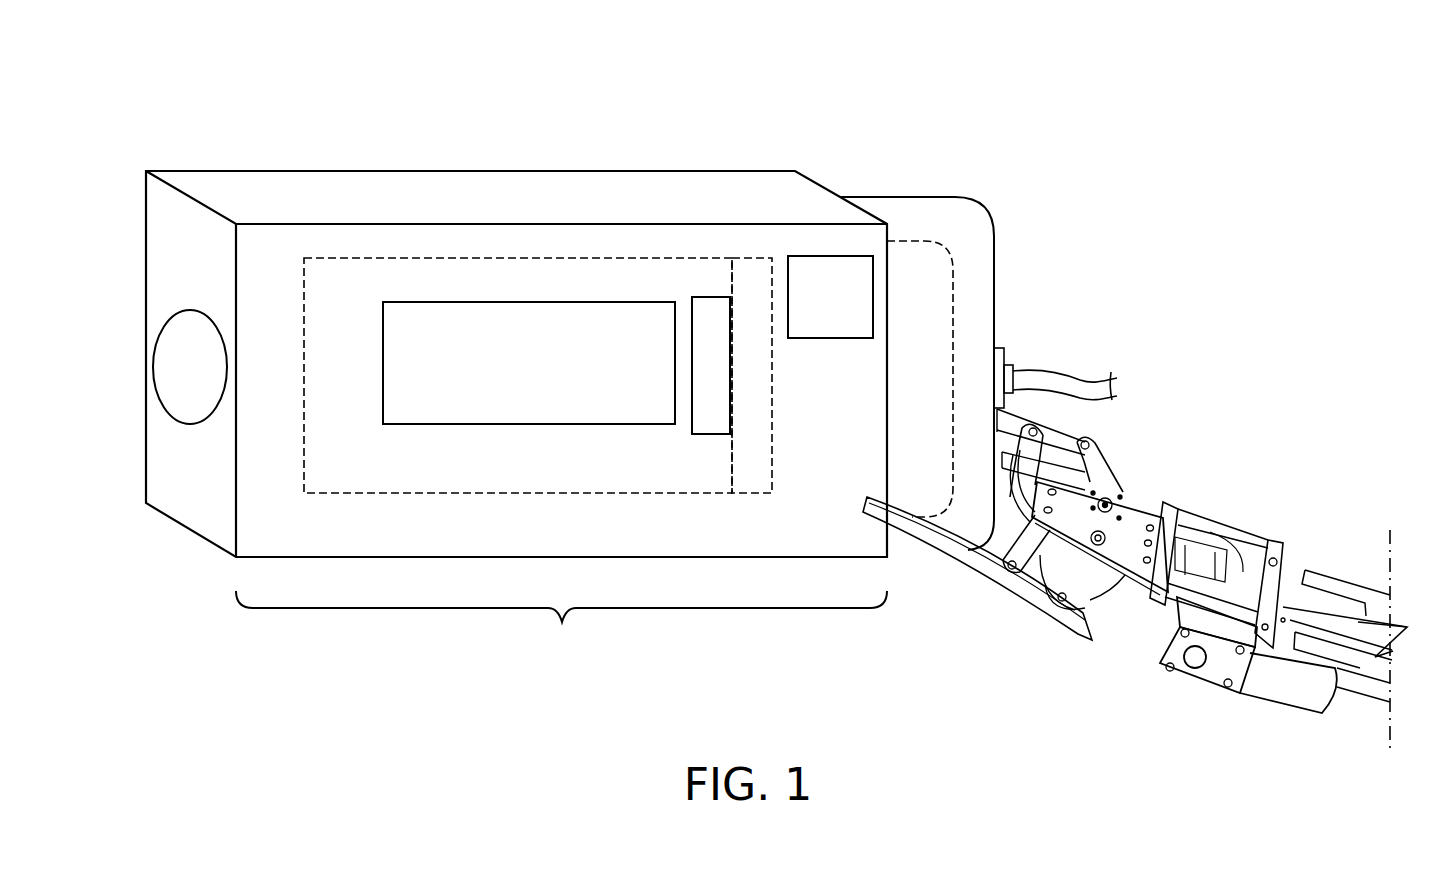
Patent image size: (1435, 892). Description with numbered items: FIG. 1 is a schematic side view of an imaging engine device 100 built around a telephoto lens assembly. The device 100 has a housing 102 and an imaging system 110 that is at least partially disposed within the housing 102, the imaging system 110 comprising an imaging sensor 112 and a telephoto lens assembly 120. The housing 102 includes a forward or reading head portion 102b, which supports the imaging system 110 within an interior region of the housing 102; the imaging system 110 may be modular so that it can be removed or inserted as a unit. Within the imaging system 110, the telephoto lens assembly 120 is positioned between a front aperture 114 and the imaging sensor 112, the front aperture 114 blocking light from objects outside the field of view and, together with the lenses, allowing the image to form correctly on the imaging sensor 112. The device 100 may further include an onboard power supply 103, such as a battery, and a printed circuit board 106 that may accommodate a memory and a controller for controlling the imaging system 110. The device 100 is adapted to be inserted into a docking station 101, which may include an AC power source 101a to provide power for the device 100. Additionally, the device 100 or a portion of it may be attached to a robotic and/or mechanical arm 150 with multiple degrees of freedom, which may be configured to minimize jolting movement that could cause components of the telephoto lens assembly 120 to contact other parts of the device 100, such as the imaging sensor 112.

The imaging engine device 100 is at (150, 113).
The docking station 101 is at (983, 210).
The AC power source 101a is at (1067, 374).
The housing 102 is at (828, 186).
The reading head portion 102b is at (561, 622).
The onboard power supply 103 is at (823, 265).
The printed circuit board 106 is at (753, 265).
The imaging system 110 is at (537, 495).
The imaging sensor 112 is at (702, 302).
The front aperture 114 is at (160, 365).
The telephoto lens assembly 120 is at (503, 302).
The robotic and/or mechanical arm 150 is at (1197, 683).